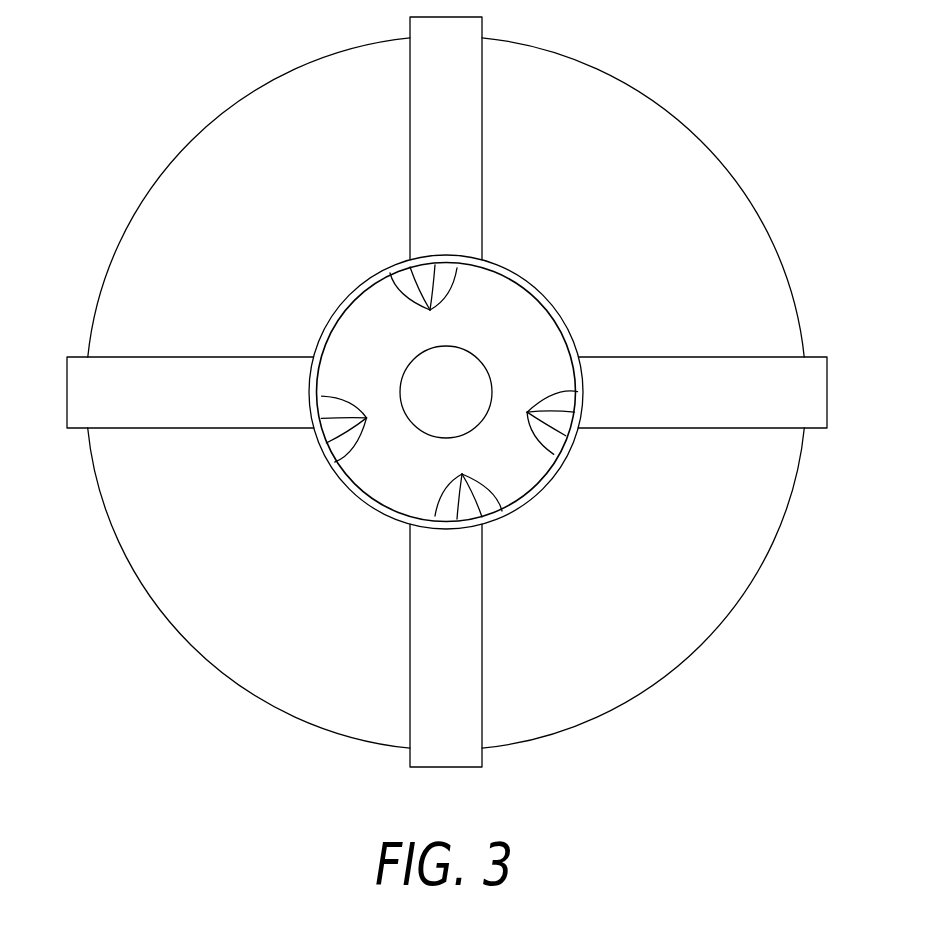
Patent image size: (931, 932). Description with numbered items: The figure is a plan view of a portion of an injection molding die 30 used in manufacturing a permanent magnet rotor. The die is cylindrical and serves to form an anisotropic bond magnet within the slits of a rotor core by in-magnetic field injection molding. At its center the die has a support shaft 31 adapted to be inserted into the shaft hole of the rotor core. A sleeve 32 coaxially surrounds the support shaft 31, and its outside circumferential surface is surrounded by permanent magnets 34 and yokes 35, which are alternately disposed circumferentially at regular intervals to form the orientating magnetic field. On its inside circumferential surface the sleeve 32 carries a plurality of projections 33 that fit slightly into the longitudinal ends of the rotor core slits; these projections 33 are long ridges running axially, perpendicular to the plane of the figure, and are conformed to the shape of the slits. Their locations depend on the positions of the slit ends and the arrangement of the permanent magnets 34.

The injection molding die 30 is at (720, 80).
The support shaft 31 is at (472, 373).
The sleeve 32 is at (548, 302).
The projections 33 is at (534, 412).
The permanent magnets 34 is at (462, 98).
The yokes 35 is at (170, 200).